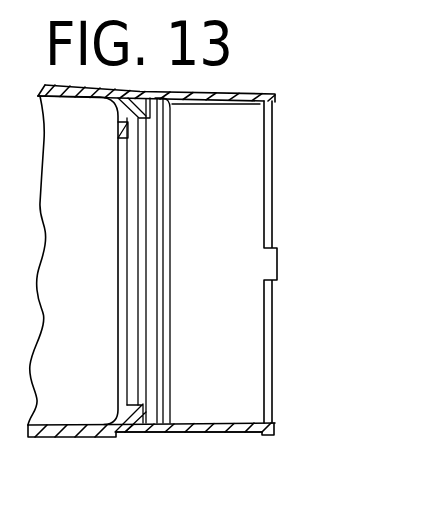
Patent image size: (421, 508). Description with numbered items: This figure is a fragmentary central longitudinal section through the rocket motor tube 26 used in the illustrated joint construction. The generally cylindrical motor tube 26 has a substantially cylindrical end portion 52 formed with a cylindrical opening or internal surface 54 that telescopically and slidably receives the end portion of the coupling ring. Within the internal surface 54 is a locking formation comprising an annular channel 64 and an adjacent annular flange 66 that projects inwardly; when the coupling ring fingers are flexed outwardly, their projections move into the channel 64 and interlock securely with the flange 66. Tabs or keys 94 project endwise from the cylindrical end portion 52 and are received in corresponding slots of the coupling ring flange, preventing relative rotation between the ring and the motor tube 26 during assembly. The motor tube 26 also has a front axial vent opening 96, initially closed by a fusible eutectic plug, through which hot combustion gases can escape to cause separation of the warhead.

The motor tube 26 is at (72, 437).
The cylindrical end portion 52 is at (230, 433).
The cylindrical internal surface 54 is at (253, 103).
The annular channel 64 is at (165, 138).
The annular flange 66 is at (163, 104).
The tabs 94 is at (274, 97).
The front axial vent opening 96 is at (130, 146).